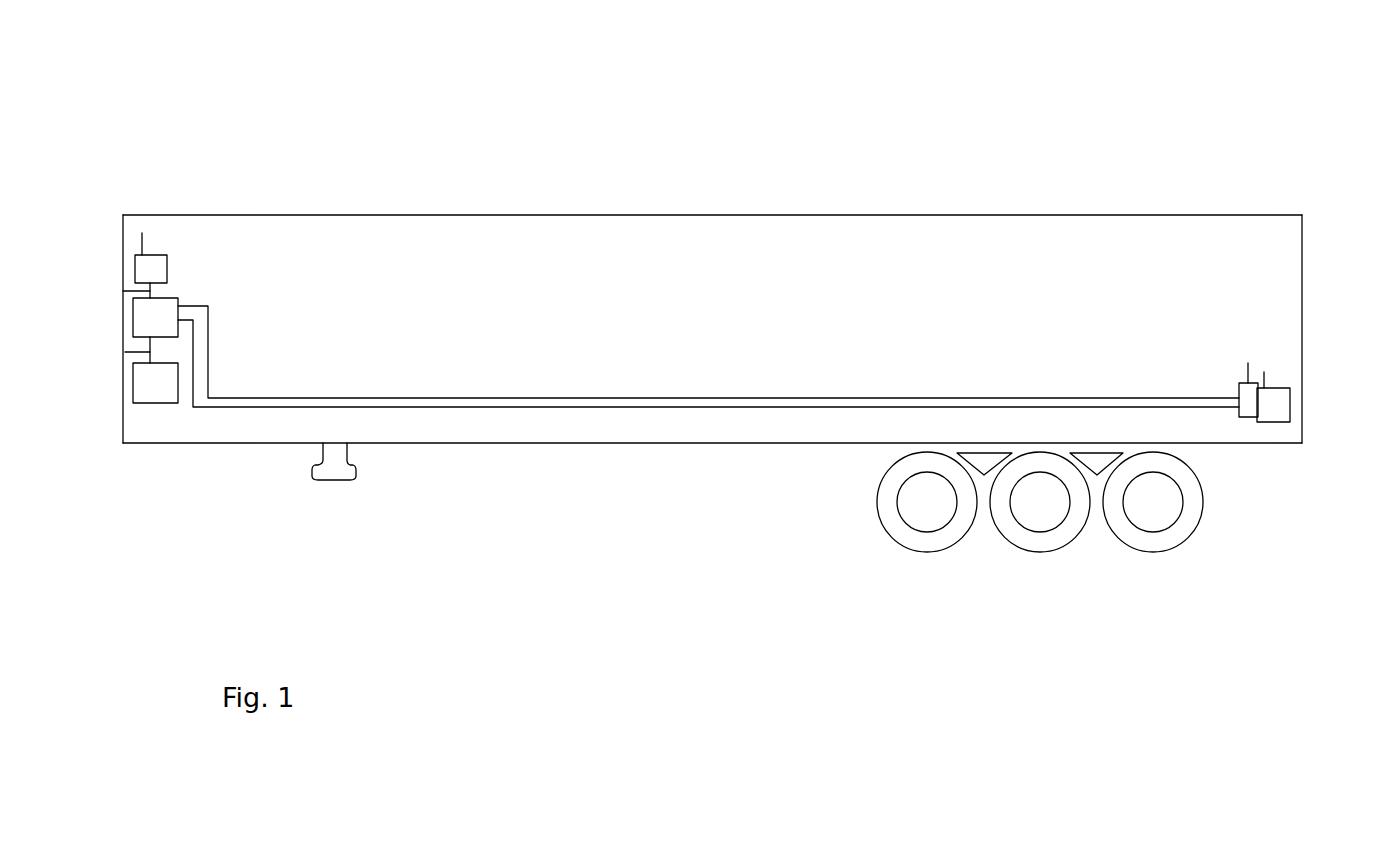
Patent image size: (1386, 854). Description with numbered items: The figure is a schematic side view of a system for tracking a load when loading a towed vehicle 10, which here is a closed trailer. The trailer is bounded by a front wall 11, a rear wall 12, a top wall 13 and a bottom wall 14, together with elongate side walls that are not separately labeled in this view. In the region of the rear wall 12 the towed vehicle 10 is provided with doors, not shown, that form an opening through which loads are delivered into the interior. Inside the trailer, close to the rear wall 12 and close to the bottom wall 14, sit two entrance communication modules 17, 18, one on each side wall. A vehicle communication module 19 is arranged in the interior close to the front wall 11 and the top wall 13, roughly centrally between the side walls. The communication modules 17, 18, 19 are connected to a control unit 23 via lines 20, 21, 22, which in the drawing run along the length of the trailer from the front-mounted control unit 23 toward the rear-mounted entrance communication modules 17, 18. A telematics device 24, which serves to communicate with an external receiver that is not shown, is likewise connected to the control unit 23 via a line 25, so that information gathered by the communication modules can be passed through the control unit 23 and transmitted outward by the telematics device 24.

The towed vehicle 10 is at (785, 150).
The front wall 11 is at (122, 240).
The rear wall 12 is at (1303, 238).
The top wall 13 is at (587, 215).
The bottom wall 14 is at (577, 443).
The entrance communication module 17 is at (1247, 417).
The entrance communication module 18 is at (1285, 405).
The vehicle communication module 19 is at (152, 262).
The line 20 is at (125, 290).
The line 21 is at (638, 398).
The line 22 is at (672, 407).
The control unit 23 is at (165, 303).
The telematics device 24 is at (165, 375).
The line 25 is at (150, 352).